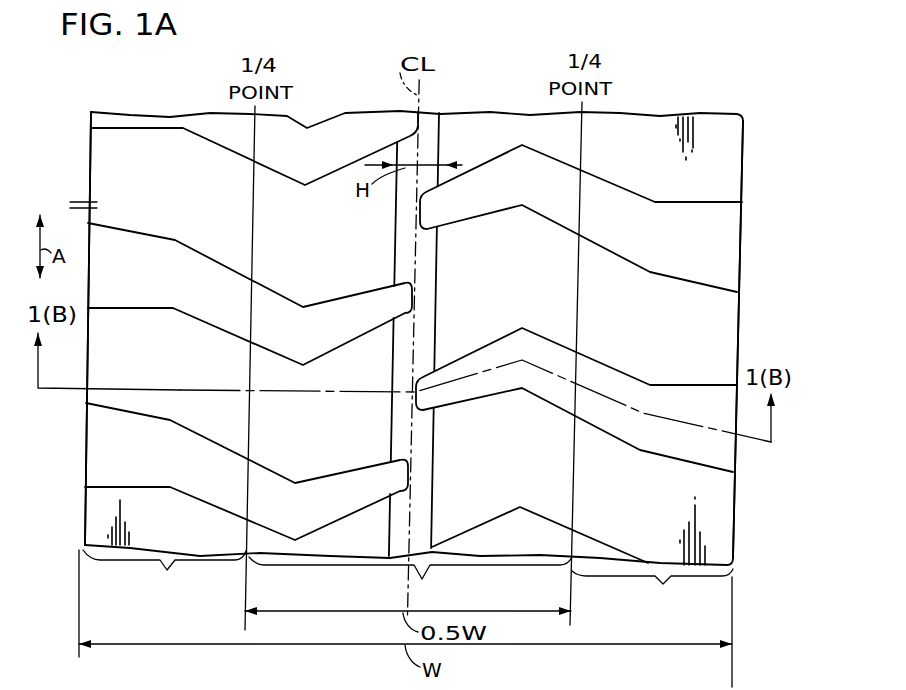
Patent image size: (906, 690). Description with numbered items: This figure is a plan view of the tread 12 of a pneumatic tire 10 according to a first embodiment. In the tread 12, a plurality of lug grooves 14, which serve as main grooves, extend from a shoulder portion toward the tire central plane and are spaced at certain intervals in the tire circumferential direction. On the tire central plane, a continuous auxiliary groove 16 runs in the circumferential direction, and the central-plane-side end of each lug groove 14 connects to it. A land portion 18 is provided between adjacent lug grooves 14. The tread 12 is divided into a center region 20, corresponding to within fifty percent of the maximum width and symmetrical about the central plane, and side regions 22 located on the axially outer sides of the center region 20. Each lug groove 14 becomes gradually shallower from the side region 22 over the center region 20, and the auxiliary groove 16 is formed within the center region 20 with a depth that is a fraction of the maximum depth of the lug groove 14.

The pneumatic tire 10 is at (739, 88).
The tread 12 is at (661, 110).
The lug groove 14 is at (197, 315).
The auxiliary groove 16 is at (434, 258).
The land portion 18 is at (96, 152).
The center region 20 is at (410, 582).
The side region 22 is at (408, 581).